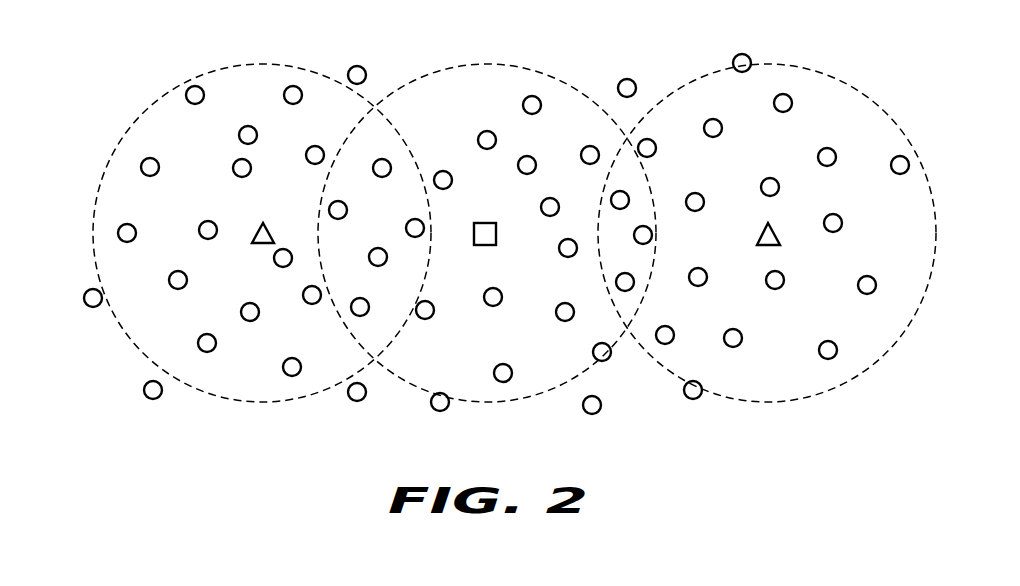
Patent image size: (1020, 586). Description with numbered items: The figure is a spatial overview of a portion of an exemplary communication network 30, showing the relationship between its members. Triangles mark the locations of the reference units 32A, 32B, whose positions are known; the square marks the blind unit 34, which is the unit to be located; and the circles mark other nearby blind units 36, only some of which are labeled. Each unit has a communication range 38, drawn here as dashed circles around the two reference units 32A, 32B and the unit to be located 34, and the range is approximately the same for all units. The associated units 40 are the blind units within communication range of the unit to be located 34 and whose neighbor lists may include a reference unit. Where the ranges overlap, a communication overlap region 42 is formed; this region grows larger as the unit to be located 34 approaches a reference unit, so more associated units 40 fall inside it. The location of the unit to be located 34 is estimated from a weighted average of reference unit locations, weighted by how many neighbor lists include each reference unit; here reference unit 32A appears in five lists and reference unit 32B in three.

The communication network 30 is at (132, 54).
The reference unit 32A is at (279, 217).
The reference unit 32B is at (758, 234).
The blind unit 34 is at (488, 222).
The nearby blind unit 36 is at (203, 101).
The communication range 38 is at (162, 97).
The associated unit 40 is at (663, 180).
The communication overlap region 42 is at (608, 217).